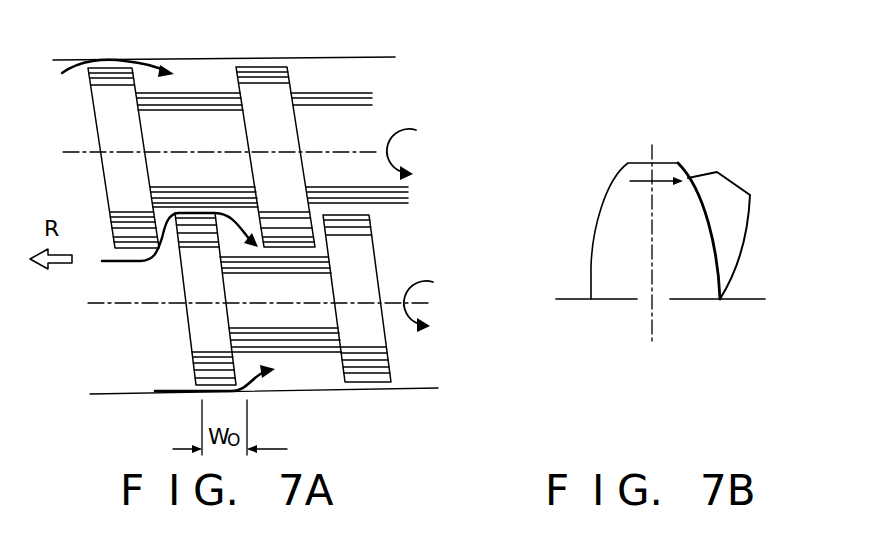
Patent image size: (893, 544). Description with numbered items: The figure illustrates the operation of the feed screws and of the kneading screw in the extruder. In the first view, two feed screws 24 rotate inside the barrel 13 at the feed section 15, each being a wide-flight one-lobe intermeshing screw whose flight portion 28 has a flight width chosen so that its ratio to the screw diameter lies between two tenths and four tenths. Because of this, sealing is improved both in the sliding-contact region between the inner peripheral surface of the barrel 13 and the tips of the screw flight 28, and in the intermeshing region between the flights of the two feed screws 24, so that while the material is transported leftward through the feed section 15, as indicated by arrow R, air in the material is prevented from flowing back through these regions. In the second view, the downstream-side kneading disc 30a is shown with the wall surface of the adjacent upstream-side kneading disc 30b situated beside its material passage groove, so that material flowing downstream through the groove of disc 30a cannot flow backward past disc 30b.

In FIG. 7A, the barrel 13 is at (393, 46).
In FIG. 7A, the feed section 15 is at (201, 79).
In FIG. 7A, the feed screw 24 is at (342, 80).
In FIG. 7A, the flight portion 28 is at (260, 72).
In FIG. 7B, the kneading disc 30a is at (627, 187).
In FIG. 7B, the kneading disc 30b is at (730, 197).